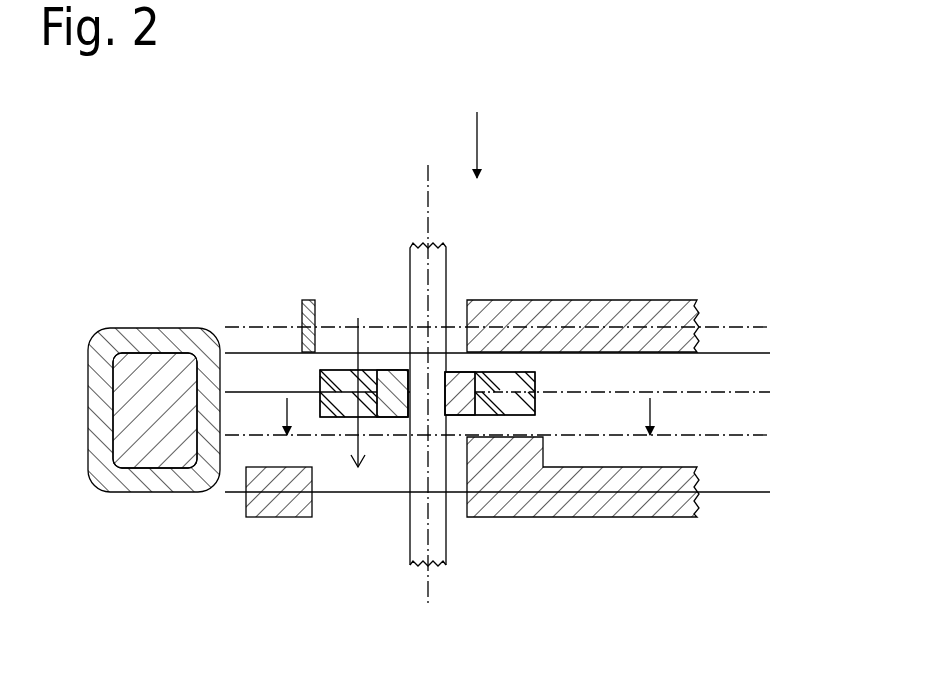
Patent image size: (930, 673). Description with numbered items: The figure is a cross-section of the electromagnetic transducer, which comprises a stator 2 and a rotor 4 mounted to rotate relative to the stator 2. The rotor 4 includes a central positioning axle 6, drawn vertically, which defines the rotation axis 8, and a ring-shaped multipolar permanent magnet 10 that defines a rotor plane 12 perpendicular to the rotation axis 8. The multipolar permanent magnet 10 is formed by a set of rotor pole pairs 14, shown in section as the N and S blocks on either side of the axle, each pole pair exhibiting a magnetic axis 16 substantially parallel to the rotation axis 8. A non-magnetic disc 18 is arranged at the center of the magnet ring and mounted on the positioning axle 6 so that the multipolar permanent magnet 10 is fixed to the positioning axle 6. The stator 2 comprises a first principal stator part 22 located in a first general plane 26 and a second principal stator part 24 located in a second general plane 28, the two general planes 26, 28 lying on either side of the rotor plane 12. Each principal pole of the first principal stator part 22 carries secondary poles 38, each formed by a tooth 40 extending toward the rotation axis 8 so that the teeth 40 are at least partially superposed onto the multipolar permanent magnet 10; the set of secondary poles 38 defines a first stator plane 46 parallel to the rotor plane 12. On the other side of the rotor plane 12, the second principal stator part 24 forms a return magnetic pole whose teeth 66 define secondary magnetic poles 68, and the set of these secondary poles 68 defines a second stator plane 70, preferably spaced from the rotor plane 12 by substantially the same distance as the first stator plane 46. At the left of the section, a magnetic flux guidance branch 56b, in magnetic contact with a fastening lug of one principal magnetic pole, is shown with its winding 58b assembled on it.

The stator 2 is at (611, 560).
The rotor 4 is at (394, 510).
The positioning axle 6 is at (442, 268).
The rotation axis 8 is at (428, 183).
The multipolar permanent magnet 10 is at (605, 300).
The rotor plane 12 is at (747, 392).
The rotor pole pairs 14 is at (340, 362).
The magnetic axis 16 is at (352, 442).
The non-magnetic disc 18 is at (463, 395).
The first principal stator part 22 is at (304, 300).
The second principal stator part 24 is at (260, 510).
The first general plane 26 is at (710, 327).
The second general plane 28 is at (740, 493).
The secondary poles 38 is at (488, 316).
The tooth 40 is at (541, 372).
The first stator plane 46 is at (760, 351).
The magnetic flux guidance branch 56b is at (130, 452).
The winding 58b is at (138, 340).
The teeth 66 is at (515, 465).
The secondary magnetic poles 68 is at (498, 455).
The second stator plane 70 is at (723, 436).